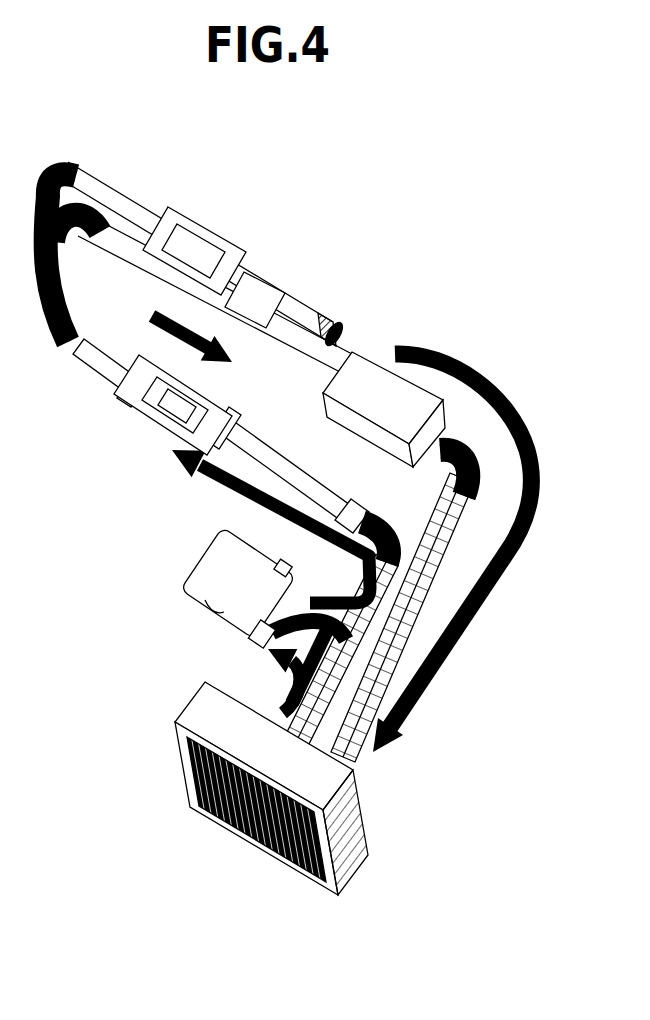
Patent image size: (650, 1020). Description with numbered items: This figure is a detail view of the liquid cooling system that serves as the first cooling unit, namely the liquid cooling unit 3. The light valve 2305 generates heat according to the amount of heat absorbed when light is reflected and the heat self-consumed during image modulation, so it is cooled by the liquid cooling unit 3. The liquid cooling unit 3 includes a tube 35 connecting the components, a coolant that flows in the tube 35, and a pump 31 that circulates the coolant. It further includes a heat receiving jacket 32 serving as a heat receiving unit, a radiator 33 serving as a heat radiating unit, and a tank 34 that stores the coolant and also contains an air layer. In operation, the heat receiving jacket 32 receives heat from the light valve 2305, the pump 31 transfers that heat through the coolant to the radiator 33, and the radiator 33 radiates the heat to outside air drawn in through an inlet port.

The liquid cooling unit 3 is at (497, 833).
The pump 31 is at (217, 598).
The heat receiving jacket 32 is at (217, 420).
The radiator 33 is at (216, 712).
The tank 34 is at (362, 372).
The tube 35 is at (270, 465).
The light valve 2305 is at (170, 413).